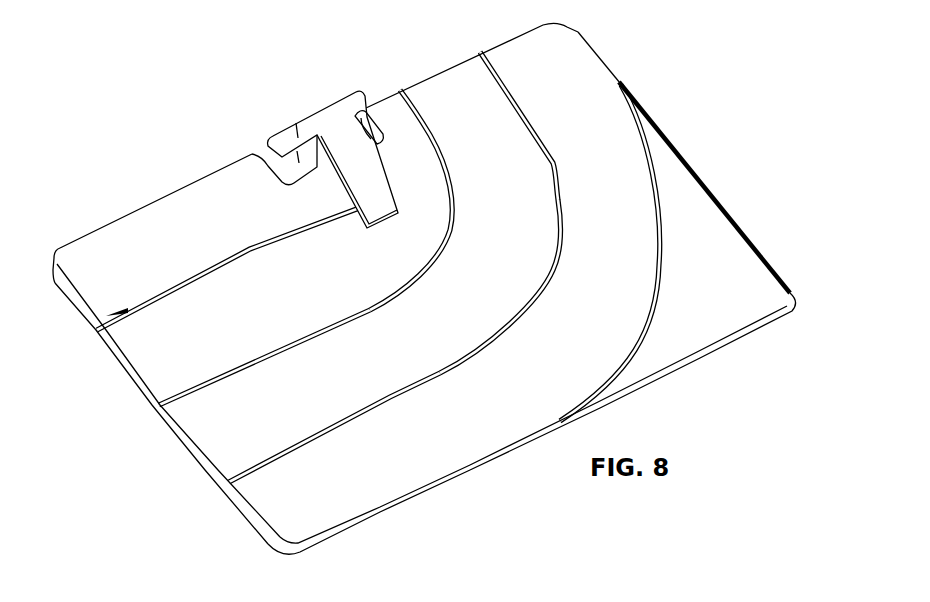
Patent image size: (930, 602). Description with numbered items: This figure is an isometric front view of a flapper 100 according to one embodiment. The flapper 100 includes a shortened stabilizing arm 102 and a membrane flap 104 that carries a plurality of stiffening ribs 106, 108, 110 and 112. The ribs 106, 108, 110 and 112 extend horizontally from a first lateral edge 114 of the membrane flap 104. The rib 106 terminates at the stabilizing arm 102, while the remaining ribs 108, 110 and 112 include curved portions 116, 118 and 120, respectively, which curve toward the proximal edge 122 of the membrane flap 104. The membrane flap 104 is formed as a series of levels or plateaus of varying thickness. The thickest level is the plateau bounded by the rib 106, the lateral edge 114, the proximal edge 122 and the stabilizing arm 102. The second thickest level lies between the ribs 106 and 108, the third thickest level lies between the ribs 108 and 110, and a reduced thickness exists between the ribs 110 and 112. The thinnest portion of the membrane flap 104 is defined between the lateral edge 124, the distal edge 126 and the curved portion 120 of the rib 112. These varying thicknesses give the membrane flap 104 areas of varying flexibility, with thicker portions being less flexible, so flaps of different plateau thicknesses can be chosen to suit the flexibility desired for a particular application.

The flapper 100 is at (172, 104).
The shortened stabilizing arm 102 is at (363, 166).
The membrane flap 104 is at (88, 265).
The stiffening rib 106 is at (102, 328).
The stiffening rib 108 is at (157, 409).
The stiffening rib 110 is at (227, 483).
The stiffening rib 112 is at (348, 530).
The first lateral edge 114 is at (119, 359).
The curved portion 116 is at (453, 182).
The curved portion 118 is at (555, 163).
The curved portion 120 is at (667, 262).
The proximal edge 122 is at (107, 224).
The lateral edge 124 is at (770, 257).
The distal edge 126 is at (720, 358).